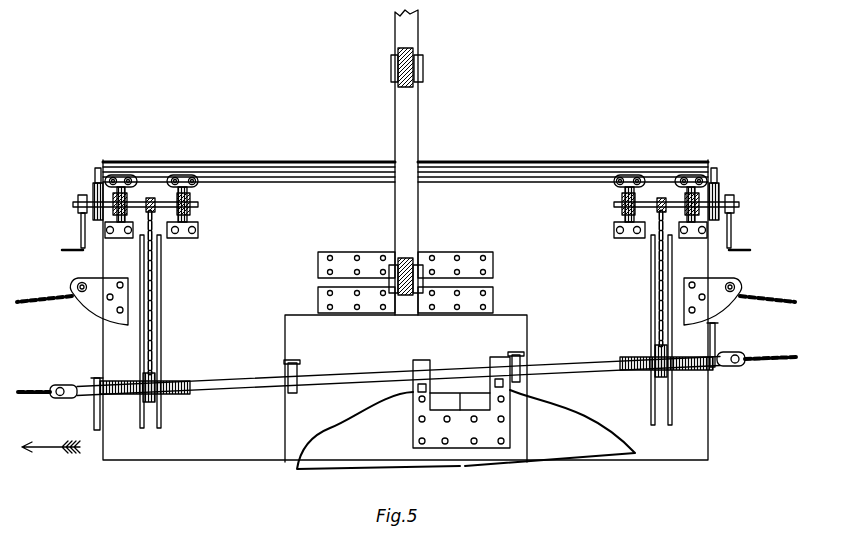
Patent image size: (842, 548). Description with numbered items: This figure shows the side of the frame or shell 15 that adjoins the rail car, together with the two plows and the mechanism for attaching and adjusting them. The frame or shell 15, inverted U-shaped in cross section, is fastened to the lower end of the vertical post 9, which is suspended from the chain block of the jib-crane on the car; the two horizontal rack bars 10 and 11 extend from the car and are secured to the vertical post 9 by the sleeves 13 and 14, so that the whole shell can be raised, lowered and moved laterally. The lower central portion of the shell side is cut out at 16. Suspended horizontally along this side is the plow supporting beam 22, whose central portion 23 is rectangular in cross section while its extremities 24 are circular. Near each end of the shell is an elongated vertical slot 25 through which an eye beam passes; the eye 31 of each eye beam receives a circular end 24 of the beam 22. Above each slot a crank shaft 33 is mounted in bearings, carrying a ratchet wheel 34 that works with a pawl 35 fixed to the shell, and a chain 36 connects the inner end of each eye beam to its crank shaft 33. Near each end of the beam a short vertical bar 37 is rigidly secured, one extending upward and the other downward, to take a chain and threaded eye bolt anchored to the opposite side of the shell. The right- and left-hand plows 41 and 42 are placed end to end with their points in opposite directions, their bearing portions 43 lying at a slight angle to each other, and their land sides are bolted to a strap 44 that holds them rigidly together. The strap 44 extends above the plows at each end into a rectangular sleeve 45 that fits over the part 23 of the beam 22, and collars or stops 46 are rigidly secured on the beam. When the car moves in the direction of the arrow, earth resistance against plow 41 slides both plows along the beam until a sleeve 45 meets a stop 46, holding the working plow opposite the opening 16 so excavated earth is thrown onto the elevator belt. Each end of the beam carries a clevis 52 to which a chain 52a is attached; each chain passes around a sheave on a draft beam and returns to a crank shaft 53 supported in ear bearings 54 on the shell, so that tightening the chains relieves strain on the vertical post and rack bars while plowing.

The vertical post 9 is at (416, 27).
The horizontal rack bar 10 is at (416, 52).
The horizontal rack bar 11 is at (424, 262).
The sleeve 13 is at (424, 70).
The sleeve 14 is at (445, 257).
The frame or shell 15 is at (405, 310).
The cut-out 16 is at (406, 388).
The plow supporting beam 22 is at (365, 372).
The rectangular central portion 23 is at (573, 368).
The circular extremity 24 is at (628, 370).
The elongated vertical aperture or slot 25 is at (666, 420).
The eye 31 is at (158, 377).
The crank shaft 33 is at (734, 205).
The ratchet wheel 34 is at (717, 192).
The pawl 35 is at (717, 176).
The chain 36 is at (672, 261).
The vertical short bar 37 is at (715, 337).
The plow 41 is at (378, 430).
The plow 42 is at (550, 428).
The bearing portion 43 is at (546, 467).
The strap 44 is at (470, 440).
The sleeve 45 is at (497, 357).
The collar or stop 46 is at (530, 360).
The clevis 52 is at (736, 352).
The chain 52a is at (778, 362).
The crank shaft 53 is at (742, 285).
The ear bearing 54 is at (722, 283).